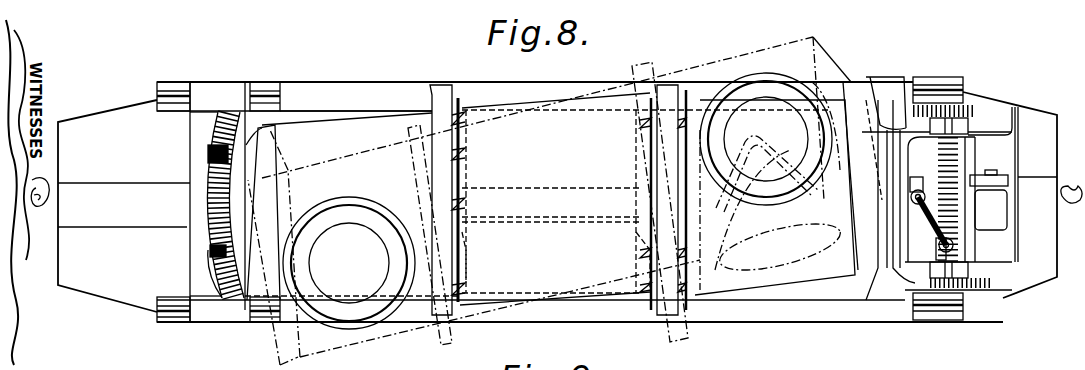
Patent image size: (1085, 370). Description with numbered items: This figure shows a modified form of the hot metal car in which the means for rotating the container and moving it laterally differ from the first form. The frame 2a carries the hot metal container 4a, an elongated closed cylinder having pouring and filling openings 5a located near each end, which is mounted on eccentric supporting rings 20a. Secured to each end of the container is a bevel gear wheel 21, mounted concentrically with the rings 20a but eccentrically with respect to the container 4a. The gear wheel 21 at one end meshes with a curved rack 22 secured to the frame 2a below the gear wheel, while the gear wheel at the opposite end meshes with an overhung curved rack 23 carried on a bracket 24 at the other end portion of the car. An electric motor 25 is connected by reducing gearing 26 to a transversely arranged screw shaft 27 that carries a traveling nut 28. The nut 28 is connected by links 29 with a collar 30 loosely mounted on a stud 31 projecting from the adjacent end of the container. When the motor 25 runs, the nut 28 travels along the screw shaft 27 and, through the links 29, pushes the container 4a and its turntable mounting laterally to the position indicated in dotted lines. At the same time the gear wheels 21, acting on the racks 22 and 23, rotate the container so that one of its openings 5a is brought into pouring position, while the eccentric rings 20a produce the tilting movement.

The frame 2a is at (762, 327).
The hot metal container 4a is at (645, 199).
The pouring and filling opening 5a is at (822, 258).
The eccentric supporting rings 20a is at (440, 95).
The bevel gear wheel 21 is at (222, 175).
The curved rack 22 is at (225, 300).
The overhung curved rack 23 is at (886, 280).
The bracket 24 is at (965, 125).
The electric motor 25 is at (948, 232).
The reducing gearing 26 is at (970, 292).
The screw shaft 27 is at (958, 186).
The traveling nut 28 is at (955, 247).
The links 29 is at (995, 212).
The collar 30 is at (925, 183).
The stud 31 is at (912, 178).